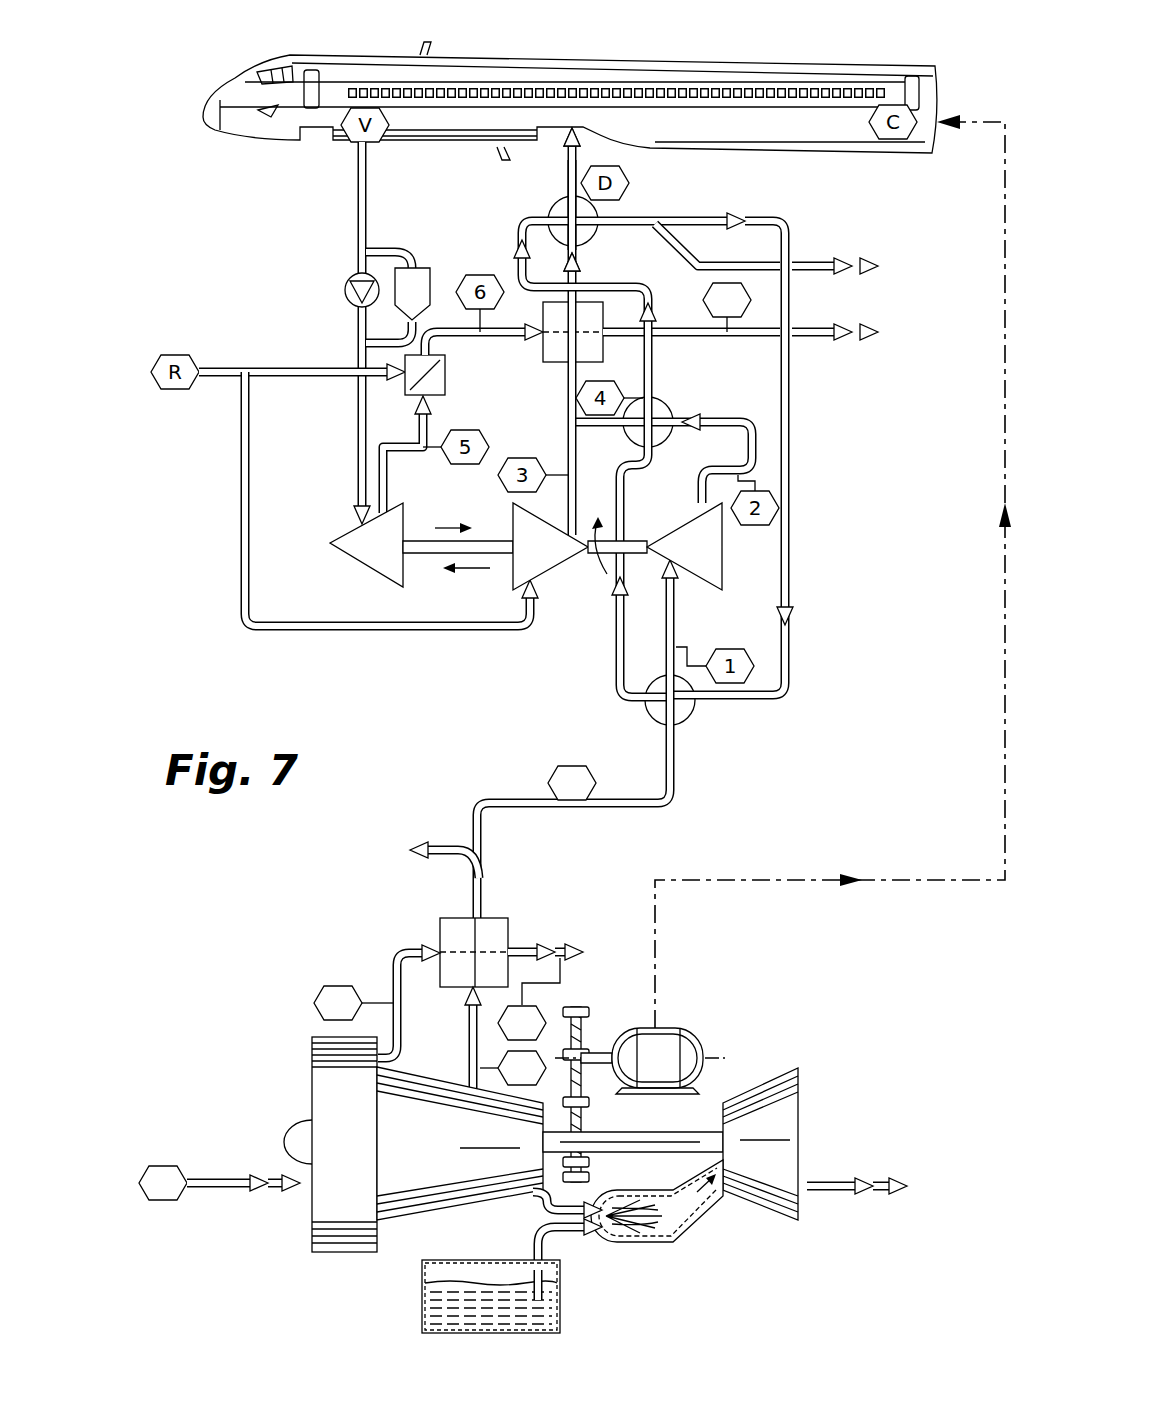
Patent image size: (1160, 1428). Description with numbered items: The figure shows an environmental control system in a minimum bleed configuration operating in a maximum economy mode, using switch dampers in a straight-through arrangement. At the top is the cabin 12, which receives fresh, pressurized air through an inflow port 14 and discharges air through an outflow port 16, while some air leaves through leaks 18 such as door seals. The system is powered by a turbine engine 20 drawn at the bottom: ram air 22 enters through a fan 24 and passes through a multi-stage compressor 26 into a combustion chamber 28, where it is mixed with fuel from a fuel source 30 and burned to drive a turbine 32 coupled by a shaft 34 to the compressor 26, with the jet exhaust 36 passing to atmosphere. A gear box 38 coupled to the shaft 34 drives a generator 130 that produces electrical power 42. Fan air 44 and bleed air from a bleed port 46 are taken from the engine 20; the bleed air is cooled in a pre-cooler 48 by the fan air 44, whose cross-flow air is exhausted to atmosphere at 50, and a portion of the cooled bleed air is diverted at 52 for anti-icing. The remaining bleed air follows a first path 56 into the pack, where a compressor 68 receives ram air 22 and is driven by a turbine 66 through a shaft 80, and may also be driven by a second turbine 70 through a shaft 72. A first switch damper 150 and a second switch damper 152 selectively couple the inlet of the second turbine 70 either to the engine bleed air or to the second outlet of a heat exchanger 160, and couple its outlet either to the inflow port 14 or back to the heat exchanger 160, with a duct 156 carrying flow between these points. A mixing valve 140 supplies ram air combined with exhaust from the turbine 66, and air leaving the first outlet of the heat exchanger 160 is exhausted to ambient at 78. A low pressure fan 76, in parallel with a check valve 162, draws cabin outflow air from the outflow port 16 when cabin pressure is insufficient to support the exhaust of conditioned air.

The cabin 12 is at (445, 50).
The inflow port 14 is at (562, 142).
The outflow port 16 is at (343, 152).
The leaks 18 is at (812, 266).
The turbine engine 20 is at (259, 1022).
The ram air 22 is at (243, 540).
The fan 24 is at (335, 1255).
The multi-stage compressor 26 is at (395, 1225).
The combustion chamber 28 is at (690, 1236).
The fuel source 30 is at (560, 1303).
The turbine 32 is at (757, 1087).
The shaft 34 is at (638, 1131).
The jet exhaust 36 is at (830, 1183).
The gear box 38 is at (604, 1022).
The electrical power 42 is at (1000, 788).
The fan air 44 is at (390, 972).
The bleed port 46 is at (462, 1096).
The pre-cooler 48 is at (495, 918).
The cross-flow air exhaust 50 is at (537, 948).
The anti-ice air 52 is at (445, 855).
The first path 56 is at (486, 784).
The turbine 66 is at (368, 574).
The compressor 68 is at (514, 522).
The second turbine 70 is at (702, 588).
The shaft 72 is at (636, 540).
The low pressure fan 76 is at (432, 290).
The exhaust to ambient 78 is at (810, 340).
The shaft 80 is at (422, 538).
The generator 130 is at (668, 1030).
The mixing valve 140 is at (446, 376).
The first switch damper 150 is at (650, 712).
The second switch damper 152 is at (672, 406).
The bypass duct 156 is at (802, 541).
The heat exchanger 160 is at (556, 365).
The check valve 162 is at (344, 289).